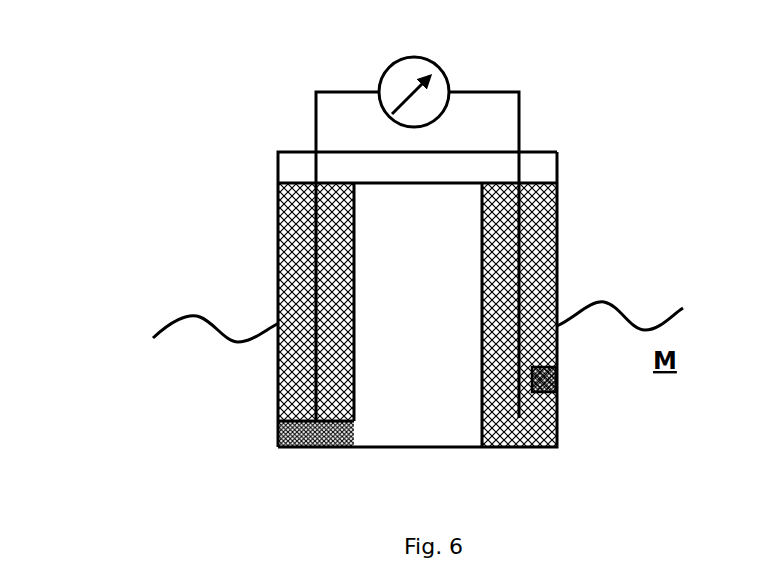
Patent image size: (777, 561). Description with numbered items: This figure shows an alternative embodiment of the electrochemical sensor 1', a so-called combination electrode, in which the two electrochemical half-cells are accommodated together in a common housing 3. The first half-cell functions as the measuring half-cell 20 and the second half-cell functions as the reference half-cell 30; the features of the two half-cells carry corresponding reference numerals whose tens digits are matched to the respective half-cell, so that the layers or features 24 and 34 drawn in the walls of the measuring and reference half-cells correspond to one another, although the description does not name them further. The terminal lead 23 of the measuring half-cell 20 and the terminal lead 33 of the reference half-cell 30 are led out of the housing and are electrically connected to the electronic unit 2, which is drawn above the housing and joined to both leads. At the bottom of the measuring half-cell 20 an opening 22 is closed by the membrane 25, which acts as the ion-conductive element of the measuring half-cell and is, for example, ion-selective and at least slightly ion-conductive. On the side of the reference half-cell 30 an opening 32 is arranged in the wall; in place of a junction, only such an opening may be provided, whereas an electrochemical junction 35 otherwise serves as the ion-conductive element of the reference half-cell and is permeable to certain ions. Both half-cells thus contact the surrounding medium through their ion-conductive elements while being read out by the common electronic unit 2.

The electrochemical sensor 1' is at (324, 231).
The electronic unit 2 is at (376, 69).
The common housing 3 is at (400, 456).
The measuring half-cell 20 is at (241, 192).
The opening 22 is at (292, 418).
The terminal lead 23 is at (316, 120).
The outer layer of first electrode 24 is at (297, 288).
The membrane 25 is at (274, 427).
The reference half-cell 30 is at (592, 201).
The opening 32 is at (556, 378).
The terminal lead 33 is at (519, 134).
The outer layer of second electrode 34 is at (556, 283).
The electrochemical junction 35 is at (565, 398).